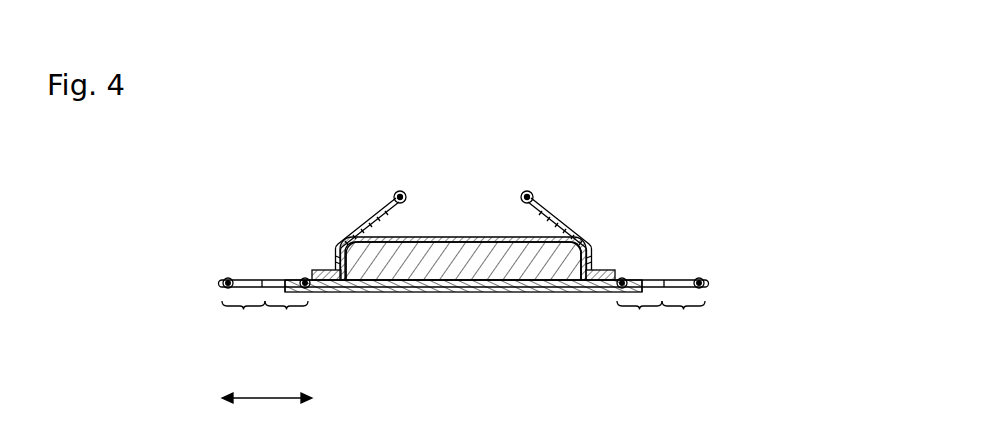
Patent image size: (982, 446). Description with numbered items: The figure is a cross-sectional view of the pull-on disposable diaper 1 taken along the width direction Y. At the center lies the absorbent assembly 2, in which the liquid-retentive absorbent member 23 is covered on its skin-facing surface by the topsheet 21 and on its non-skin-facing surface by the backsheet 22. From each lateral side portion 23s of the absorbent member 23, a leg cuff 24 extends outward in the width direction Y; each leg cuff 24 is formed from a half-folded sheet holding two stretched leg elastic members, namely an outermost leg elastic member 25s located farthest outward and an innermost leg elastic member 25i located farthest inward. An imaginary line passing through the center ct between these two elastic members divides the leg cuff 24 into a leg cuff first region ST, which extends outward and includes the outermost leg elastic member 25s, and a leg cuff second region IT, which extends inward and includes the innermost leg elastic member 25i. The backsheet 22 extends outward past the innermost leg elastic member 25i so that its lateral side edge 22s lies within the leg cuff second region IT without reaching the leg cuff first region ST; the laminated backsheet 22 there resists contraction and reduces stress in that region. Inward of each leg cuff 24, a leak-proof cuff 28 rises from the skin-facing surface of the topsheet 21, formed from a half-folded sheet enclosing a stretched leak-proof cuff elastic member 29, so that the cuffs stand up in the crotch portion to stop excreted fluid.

The pull-on disposable diaper 1 is at (647, 145).
The absorbent assembly 2 is at (482, 180).
The topsheet 21 is at (444, 237).
The backsheet 22 is at (430, 293).
The lateral side edge of the backsheet 22s is at (277, 287).
The absorbent member 23 is at (505, 262).
The lateral side portion of the absorbent member 23s is at (350, 288).
The leg cuff 24 is at (200, 282).
The outermost leg elastic member 25s is at (229, 278).
The innermost leg elastic member 25i is at (305, 277).
The leak-proof cuff 28 is at (342, 193).
The leak-proof cuff elastic member 29 is at (399, 190).
The center in the width direction ct is at (262, 280).
The leg cuff first region ST is at (463, 317).
The leg cuff second region IT is at (463, 317).
The width direction Y is at (267, 408).